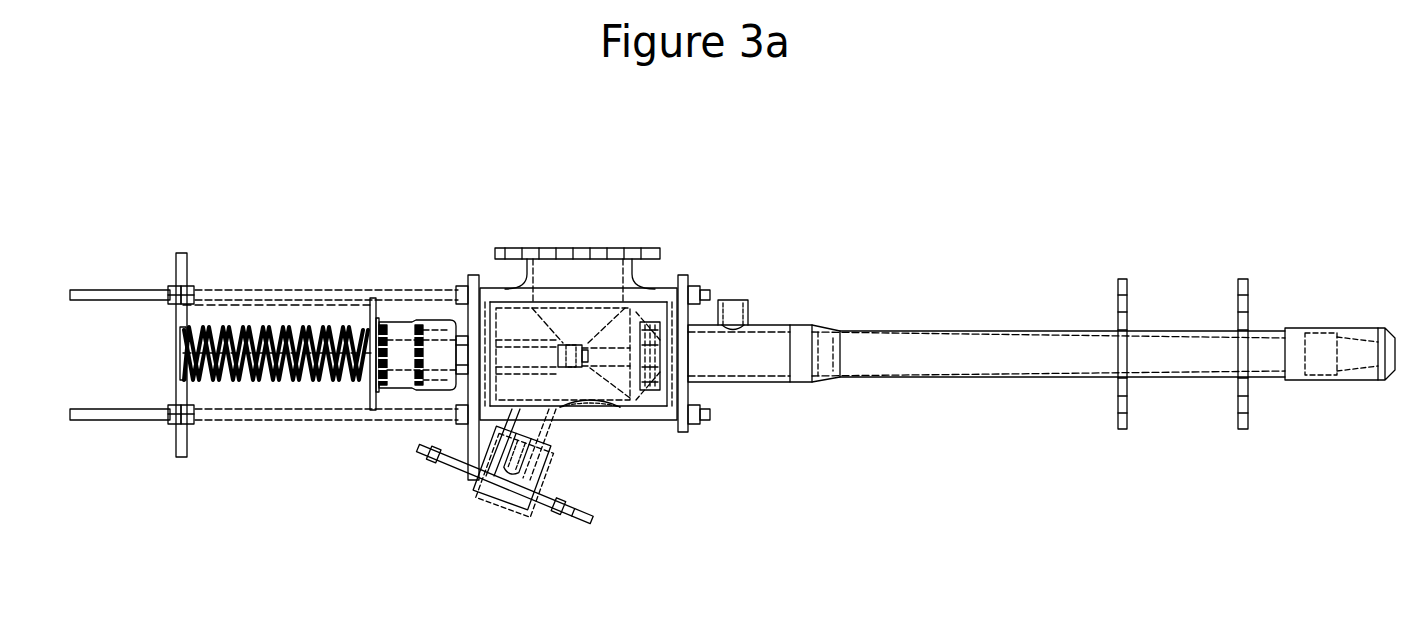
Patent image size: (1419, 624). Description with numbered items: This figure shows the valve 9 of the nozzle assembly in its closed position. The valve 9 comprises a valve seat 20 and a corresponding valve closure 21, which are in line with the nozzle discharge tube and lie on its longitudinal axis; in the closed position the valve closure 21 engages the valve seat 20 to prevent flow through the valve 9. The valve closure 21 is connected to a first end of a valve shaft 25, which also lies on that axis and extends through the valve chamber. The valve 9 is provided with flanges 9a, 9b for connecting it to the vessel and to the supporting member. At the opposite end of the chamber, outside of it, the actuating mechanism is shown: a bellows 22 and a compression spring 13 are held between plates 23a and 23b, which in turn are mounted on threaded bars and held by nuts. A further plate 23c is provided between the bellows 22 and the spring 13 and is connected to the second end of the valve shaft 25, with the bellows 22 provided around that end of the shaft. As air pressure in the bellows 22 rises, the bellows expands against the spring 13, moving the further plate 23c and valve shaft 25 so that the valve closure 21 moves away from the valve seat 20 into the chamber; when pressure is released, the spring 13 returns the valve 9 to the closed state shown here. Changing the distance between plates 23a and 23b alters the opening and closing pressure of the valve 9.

The valve 9 is at (563, 318).
The flange 9a is at (585, 254).
The flange 9b is at (566, 511).
The compression spring 13 is at (250, 382).
The valve seat 20 is at (682, 313).
The valve closure 21 is at (645, 383).
The bellows 22 is at (405, 332).
The plate 23a is at (173, 440).
The plate 23b is at (463, 407).
The further plate 23c is at (369, 390).
The valve shaft 25 is at (590, 368).